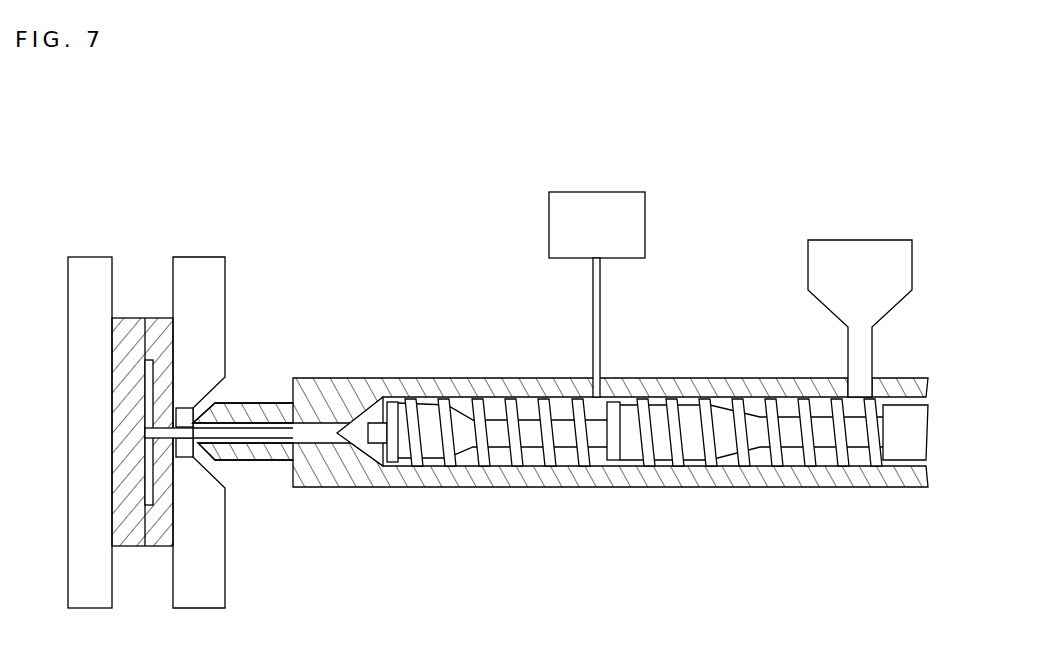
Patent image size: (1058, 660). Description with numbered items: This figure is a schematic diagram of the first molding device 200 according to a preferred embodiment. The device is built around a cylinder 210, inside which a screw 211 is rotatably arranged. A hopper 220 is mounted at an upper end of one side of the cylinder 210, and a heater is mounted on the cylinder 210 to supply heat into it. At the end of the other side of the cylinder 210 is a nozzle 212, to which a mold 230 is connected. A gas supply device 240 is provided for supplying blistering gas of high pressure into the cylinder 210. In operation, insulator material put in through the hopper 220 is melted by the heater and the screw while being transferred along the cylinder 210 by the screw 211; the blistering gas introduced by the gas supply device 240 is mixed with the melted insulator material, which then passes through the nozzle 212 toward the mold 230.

The first molding device 200 is at (78, 139).
The mold 230 is at (144, 318).
The nozzle 212 is at (235, 403).
The cylinder 210 is at (498, 488).
The screw 211 is at (628, 487).
The hopper 220 is at (860, 240).
The gas supply device 240 is at (600, 192).